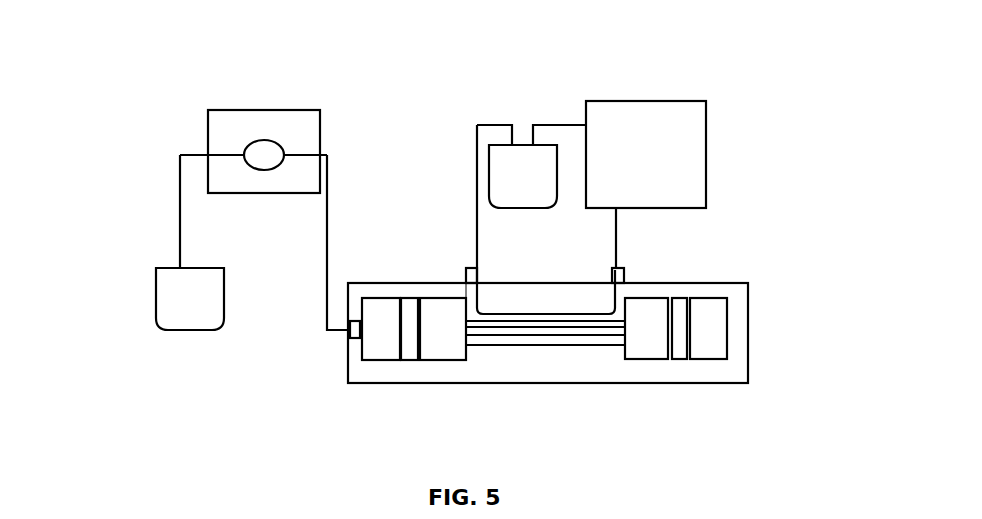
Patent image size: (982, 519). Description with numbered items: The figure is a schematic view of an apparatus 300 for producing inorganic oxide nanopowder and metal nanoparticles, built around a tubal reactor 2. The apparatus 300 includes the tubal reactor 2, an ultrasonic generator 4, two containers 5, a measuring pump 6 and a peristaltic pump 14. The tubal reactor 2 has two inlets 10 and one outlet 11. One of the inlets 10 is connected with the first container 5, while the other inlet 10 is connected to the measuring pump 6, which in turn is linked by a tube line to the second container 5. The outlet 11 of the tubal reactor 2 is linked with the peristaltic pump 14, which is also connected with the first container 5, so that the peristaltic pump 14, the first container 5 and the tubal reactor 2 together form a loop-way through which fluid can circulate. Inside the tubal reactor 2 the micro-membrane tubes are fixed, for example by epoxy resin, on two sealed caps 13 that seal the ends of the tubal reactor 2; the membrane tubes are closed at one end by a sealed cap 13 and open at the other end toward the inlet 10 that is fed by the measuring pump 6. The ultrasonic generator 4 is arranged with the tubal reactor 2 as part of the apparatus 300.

The apparatus 300 is at (54, 18).
The measuring pump 6 is at (233, 128).
The container 5 is at (168, 332).
The peristaltic pump 14 is at (660, 100).
The ultrasonic generator 4 is at (627, 368).
The tubal reactor 2 is at (570, 342).
The sealed cap 13 is at (703, 327).
The inlet 10 is at (472, 267).
The outlet 11 is at (623, 273).